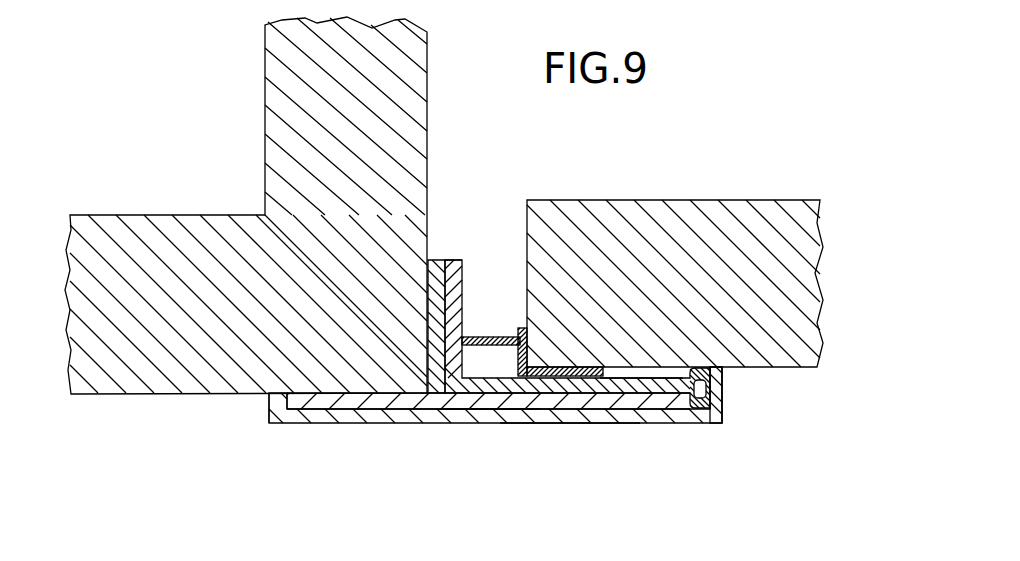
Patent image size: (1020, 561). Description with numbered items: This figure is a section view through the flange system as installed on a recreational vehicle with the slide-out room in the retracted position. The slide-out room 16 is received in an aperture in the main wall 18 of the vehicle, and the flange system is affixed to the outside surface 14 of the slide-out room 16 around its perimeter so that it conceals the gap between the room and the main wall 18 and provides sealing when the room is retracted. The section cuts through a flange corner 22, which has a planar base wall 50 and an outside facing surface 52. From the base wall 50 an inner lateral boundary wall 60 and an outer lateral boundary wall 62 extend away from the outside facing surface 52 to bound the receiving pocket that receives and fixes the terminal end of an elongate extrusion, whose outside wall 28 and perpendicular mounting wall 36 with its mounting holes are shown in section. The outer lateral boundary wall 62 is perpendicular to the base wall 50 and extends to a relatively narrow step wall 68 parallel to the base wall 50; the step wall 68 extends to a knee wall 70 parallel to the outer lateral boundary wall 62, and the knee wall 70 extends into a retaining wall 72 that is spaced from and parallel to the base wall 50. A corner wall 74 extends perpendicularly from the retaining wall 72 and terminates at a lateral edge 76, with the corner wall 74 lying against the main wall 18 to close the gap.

The outside surface 14 is at (155, 396).
The slide-out room 16 is at (191, 416).
The main wall 18 is at (733, 248).
The flange corner 22 is at (562, 428).
The outside wall 28 is at (485, 402).
The mounting wall 36 is at (433, 258).
The planar base wall 50 is at (410, 415).
The outside facing surface 52 is at (358, 422).
The inner lateral boundary wall 60 is at (277, 402).
The outer lateral boundary wall 62 is at (722, 397).
The step wall 68 is at (723, 380).
The knee wall 70 is at (687, 376).
The retaining wall 72 is at (640, 383).
The corner wall 74 is at (458, 312).
The lateral edge 76 is at (453, 258).